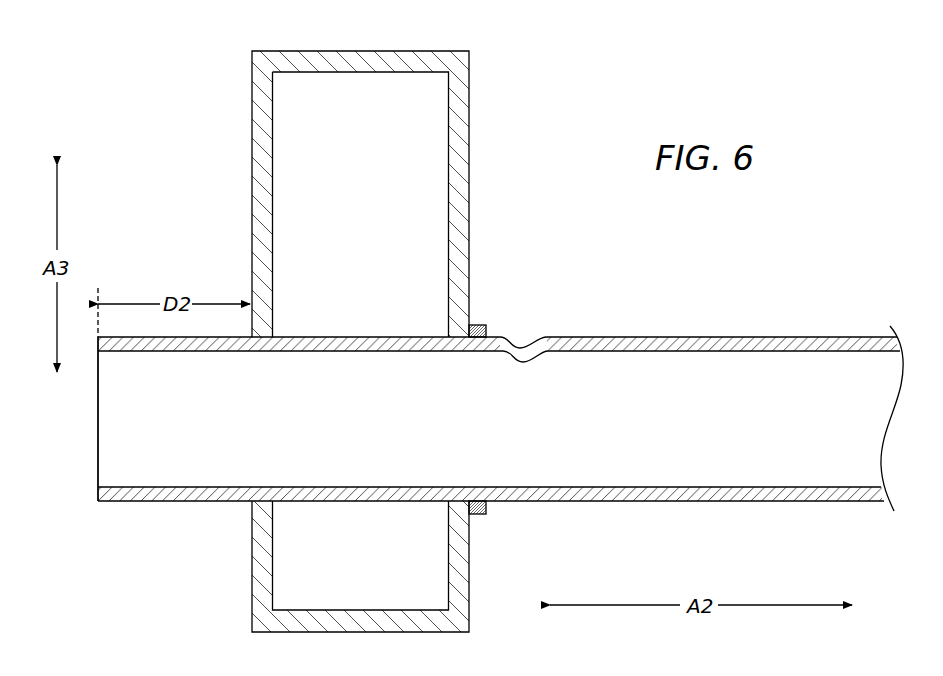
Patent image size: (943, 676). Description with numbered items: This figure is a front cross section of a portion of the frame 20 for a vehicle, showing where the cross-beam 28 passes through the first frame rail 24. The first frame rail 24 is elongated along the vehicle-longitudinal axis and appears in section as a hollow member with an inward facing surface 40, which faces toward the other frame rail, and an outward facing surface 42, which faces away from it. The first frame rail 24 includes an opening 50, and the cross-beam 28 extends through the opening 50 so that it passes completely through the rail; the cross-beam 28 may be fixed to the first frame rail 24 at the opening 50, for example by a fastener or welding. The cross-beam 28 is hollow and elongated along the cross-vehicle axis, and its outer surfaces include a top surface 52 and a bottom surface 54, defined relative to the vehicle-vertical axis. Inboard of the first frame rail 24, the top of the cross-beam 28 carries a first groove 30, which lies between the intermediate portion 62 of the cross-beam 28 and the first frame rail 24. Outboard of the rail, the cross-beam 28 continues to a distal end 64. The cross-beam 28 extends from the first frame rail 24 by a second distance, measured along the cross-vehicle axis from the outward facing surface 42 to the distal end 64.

The frame 20 is at (141, 131).
The first frame rail 24 is at (469, 155).
The cross-beam 28 is at (658, 337).
The first groove 30 is at (522, 345).
The inward facing surface 40 is at (469, 222).
The outward facing surface 42 is at (252, 233).
The opening 50 is at (252, 503).
The top surface 52 is at (781, 337).
The bottom surface 54 is at (597, 502).
The intermediate portion 62 is at (823, 502).
The distal end 64 is at (98, 465).